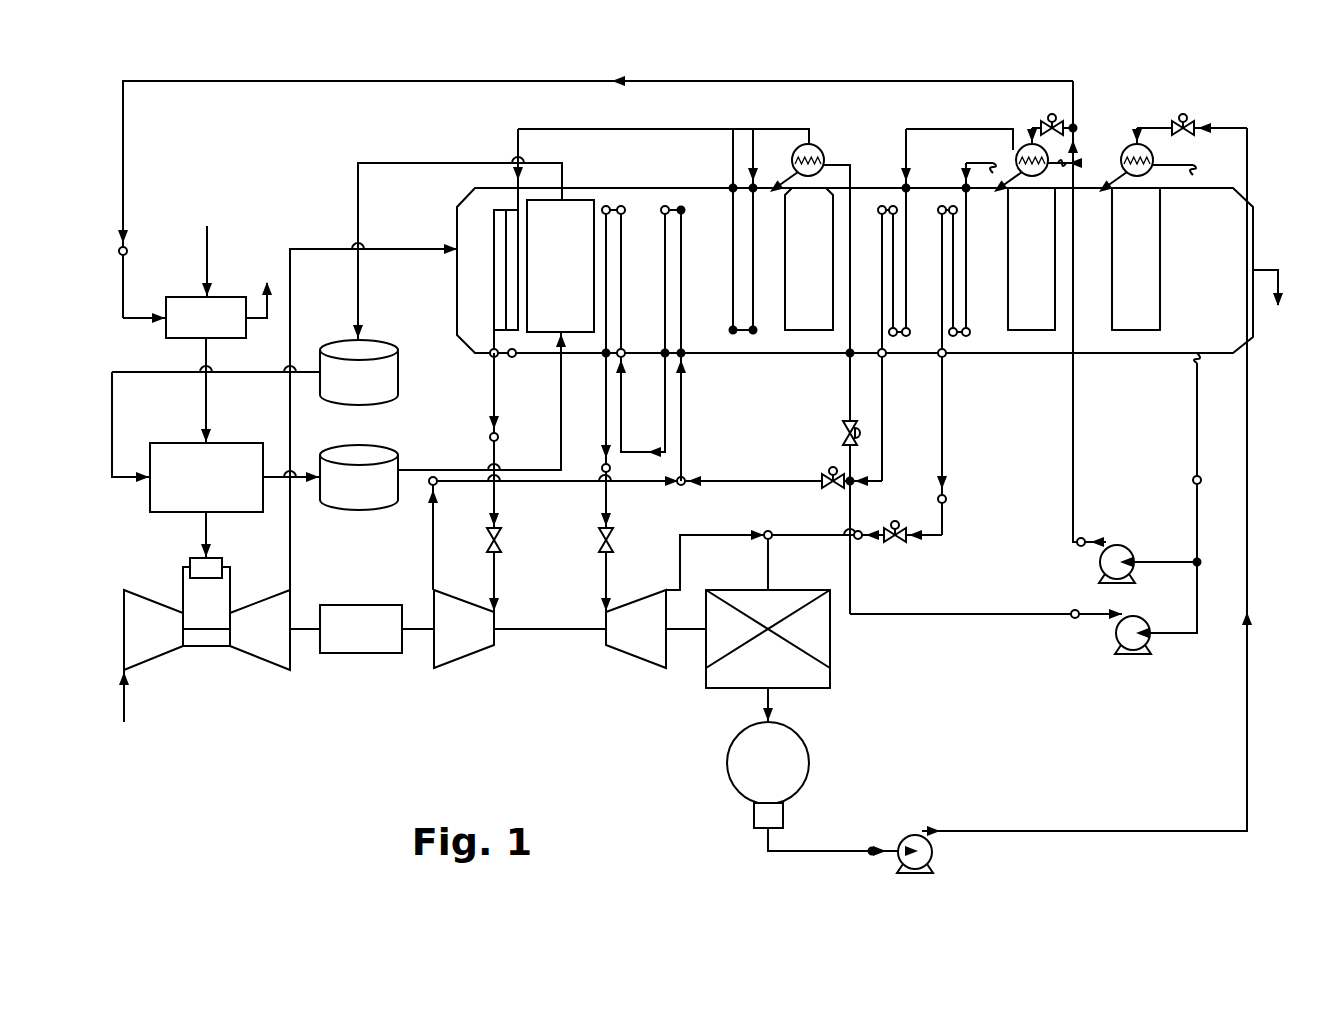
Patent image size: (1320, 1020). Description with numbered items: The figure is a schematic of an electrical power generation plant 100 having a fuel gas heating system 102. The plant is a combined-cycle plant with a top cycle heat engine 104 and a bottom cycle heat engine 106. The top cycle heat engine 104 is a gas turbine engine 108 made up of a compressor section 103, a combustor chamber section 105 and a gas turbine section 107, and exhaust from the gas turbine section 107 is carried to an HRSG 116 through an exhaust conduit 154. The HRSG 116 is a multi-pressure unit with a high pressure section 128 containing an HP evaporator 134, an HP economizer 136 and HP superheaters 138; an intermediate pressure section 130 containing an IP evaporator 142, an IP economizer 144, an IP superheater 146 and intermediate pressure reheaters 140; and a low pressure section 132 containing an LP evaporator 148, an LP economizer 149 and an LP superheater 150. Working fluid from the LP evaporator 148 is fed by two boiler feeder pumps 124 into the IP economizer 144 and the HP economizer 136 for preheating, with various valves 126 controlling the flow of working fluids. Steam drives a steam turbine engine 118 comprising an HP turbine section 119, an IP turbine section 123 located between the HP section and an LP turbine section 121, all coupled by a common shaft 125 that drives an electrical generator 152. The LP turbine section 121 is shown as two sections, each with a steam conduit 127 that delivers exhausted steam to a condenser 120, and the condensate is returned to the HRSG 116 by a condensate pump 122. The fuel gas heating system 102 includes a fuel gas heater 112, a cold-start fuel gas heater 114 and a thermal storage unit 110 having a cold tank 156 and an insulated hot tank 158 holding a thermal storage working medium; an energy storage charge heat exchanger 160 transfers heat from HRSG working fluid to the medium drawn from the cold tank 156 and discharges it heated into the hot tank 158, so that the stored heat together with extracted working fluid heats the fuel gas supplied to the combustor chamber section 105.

The electrical power generation plant 100 is at (307, 795).
The fuel gas heating system 102 is at (252, 185).
The compressor section 103 is at (123, 622).
The top cycle heat engine 104 is at (203, 644).
The combustor chamber section 105 is at (222, 558).
The bottom cycle heat engine 106 is at (857, 444).
The gas turbine section 107 is at (260, 601).
The gas turbine engine 108 is at (154, 583).
The thermal storage unit 110 is at (353, 369).
The fuel gas heater 112 is at (188, 297).
The cold-start fuel gas heater 114 is at (178, 443).
The HRSG 116 is at (1247, 362).
The steam turbine engine 118 is at (685, 546).
The HP turbine section 119 is at (465, 660).
The condenser 120 is at (805, 742).
The LP turbine section 121 is at (783, 617).
The condensate pump 122 is at (908, 833).
The IP turbine section 123 is at (630, 600).
The boiler feeder pumps 124 is at (1125, 545).
The common shaft 125 is at (526, 628).
The valves 126 is at (488, 548).
The steam conduit 127 is at (830, 680).
The high pressure section 128 is at (776, 129).
The intermediate pressure section 130 is at (977, 143).
The low pressure section 132 is at (1145, 124).
The HP evaporator 134 is at (822, 146).
The HP economizer 136 is at (852, 175).
The HP superheaters 138 is at (492, 247).
The intermediate pressure reheaters 140 is at (606, 206).
The IP evaporator 142 is at (1032, 331).
The IP economizer 144 is at (1075, 322).
The IP superheater 146 is at (893, 336).
The LP evaporator 148 is at (1160, 313).
The LP economizer 149 is at (1249, 175).
The LP superheater 150 is at (953, 336).
The electrical generator 152 is at (360, 653).
The exhaust conduit 154 is at (320, 248).
The cold tank 156 is at (345, 512).
The hot tank 158 is at (398, 378).
The energy storage charge heat exchanger 160 is at (538, 332).